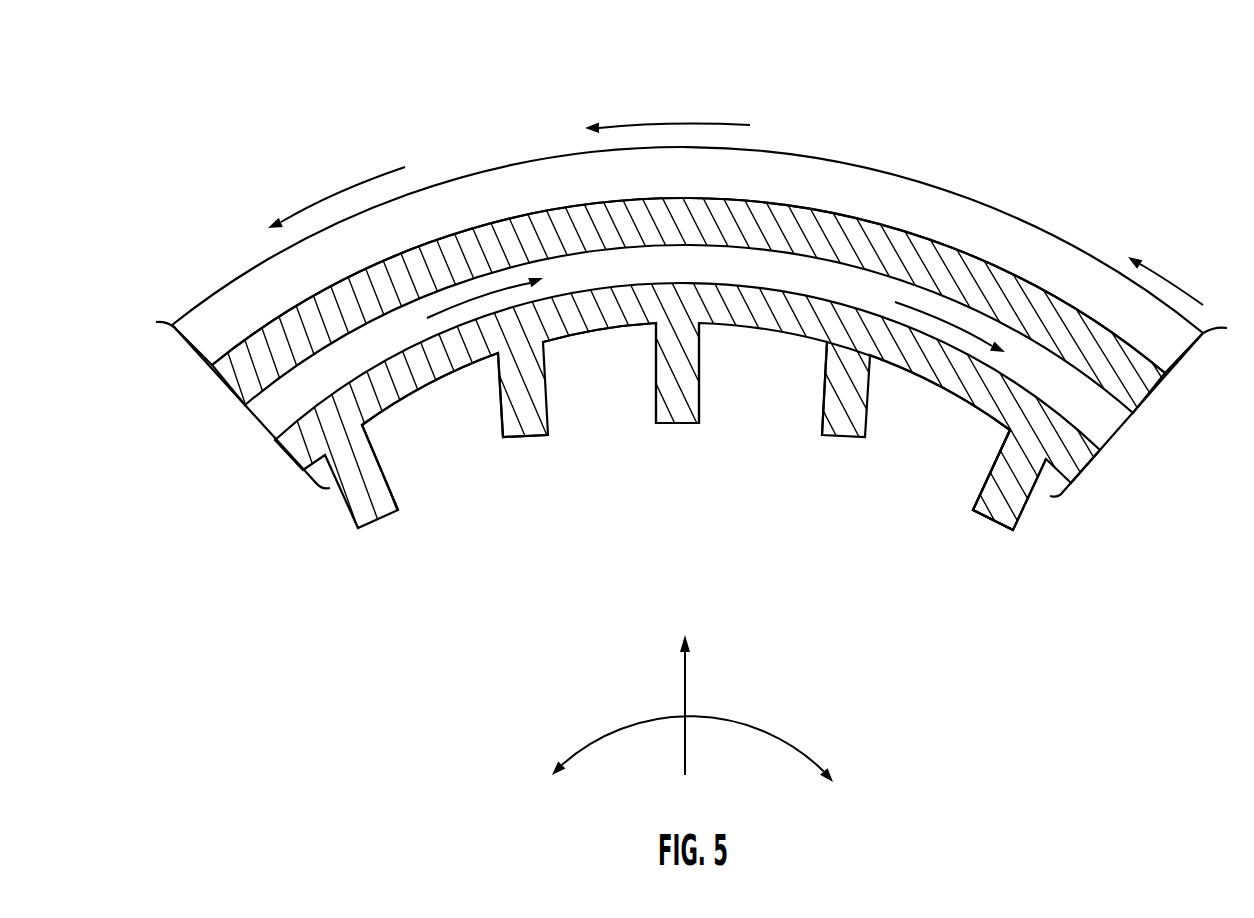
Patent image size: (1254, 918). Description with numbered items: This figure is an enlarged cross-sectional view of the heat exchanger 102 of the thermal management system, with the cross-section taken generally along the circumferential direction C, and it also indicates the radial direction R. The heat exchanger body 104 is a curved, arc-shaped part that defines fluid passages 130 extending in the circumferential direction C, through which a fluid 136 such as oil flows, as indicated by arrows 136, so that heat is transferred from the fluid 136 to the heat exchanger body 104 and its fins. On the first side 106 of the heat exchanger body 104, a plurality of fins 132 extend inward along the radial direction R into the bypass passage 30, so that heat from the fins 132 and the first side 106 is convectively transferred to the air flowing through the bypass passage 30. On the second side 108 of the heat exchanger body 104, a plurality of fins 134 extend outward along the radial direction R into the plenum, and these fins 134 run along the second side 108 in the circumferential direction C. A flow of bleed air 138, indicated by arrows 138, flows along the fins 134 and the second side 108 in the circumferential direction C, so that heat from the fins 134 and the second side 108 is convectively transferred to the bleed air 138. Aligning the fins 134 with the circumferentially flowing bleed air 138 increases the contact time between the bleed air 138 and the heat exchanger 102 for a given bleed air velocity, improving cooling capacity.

The heat exchanger 102 is at (213, 90).
The heat exchanger body 104 is at (1047, 462).
The first side 106 is at (587, 333).
The second side 108 is at (897, 223).
The fluid passage 130 is at (321, 400).
The fin 132 is at (527, 437).
The fin 134 is at (814, 157).
The fluid 136 is at (497, 290).
The bleed air 138 is at (333, 197).
The bypass passage 30 is at (699, 529).
The radial direction R is at (685, 757).
The circumferential direction C is at (780, 738).